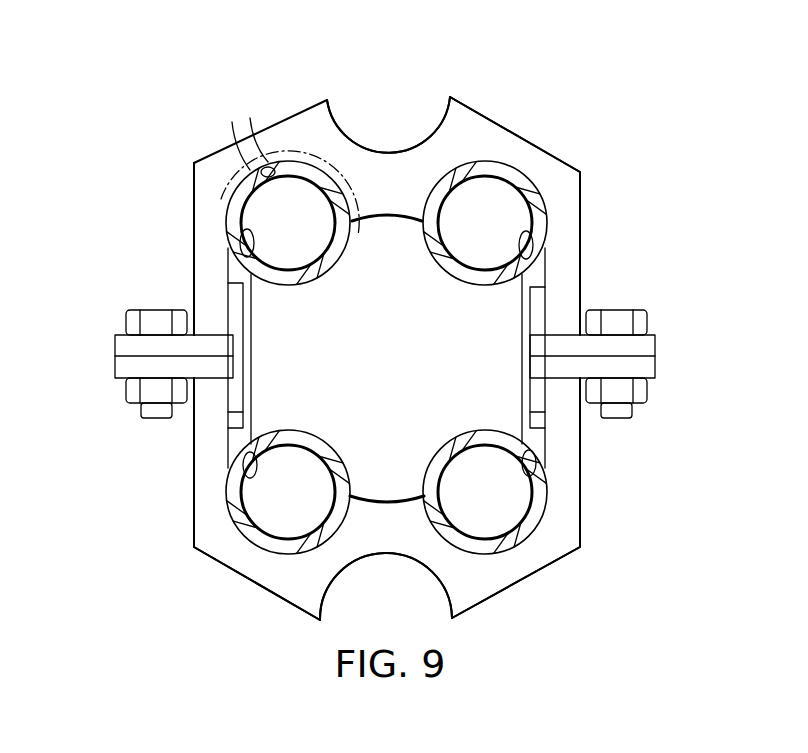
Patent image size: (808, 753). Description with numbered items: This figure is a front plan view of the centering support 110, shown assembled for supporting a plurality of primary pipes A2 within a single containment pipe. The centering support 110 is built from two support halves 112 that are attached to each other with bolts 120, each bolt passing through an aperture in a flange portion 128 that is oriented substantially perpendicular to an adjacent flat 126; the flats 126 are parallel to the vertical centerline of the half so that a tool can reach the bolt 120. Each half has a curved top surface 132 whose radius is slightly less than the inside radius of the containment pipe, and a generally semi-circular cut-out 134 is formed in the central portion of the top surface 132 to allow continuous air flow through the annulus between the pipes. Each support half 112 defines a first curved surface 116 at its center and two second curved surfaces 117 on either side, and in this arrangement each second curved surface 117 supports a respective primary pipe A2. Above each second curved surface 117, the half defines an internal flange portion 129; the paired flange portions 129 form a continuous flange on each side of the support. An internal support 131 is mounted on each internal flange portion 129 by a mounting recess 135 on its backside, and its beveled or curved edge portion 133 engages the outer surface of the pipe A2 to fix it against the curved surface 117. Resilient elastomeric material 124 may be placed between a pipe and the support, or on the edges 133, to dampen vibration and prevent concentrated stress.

The centering support 110 is at (517, 102).
The support half 112 is at (290, 122).
The first curved surface 116 is at (383, 224).
The second curved surface 117 is at (240, 128).
The bolt 120 is at (172, 310).
The resilient elastomeric material 124 is at (352, 178).
The flat 126 is at (194, 190).
The flange portion 128 is at (115, 356).
The internal flange portion 129 is at (236, 316).
The internal support 131 is at (251, 356).
The curved top surface 132 is at (543, 140).
The beveled or curved edge portion 133 is at (242, 236).
The semi-circular cut-out 134 is at (345, 120).
The mounting recess 135 is at (233, 412).
The second primary pipe A2 is at (333, 266).